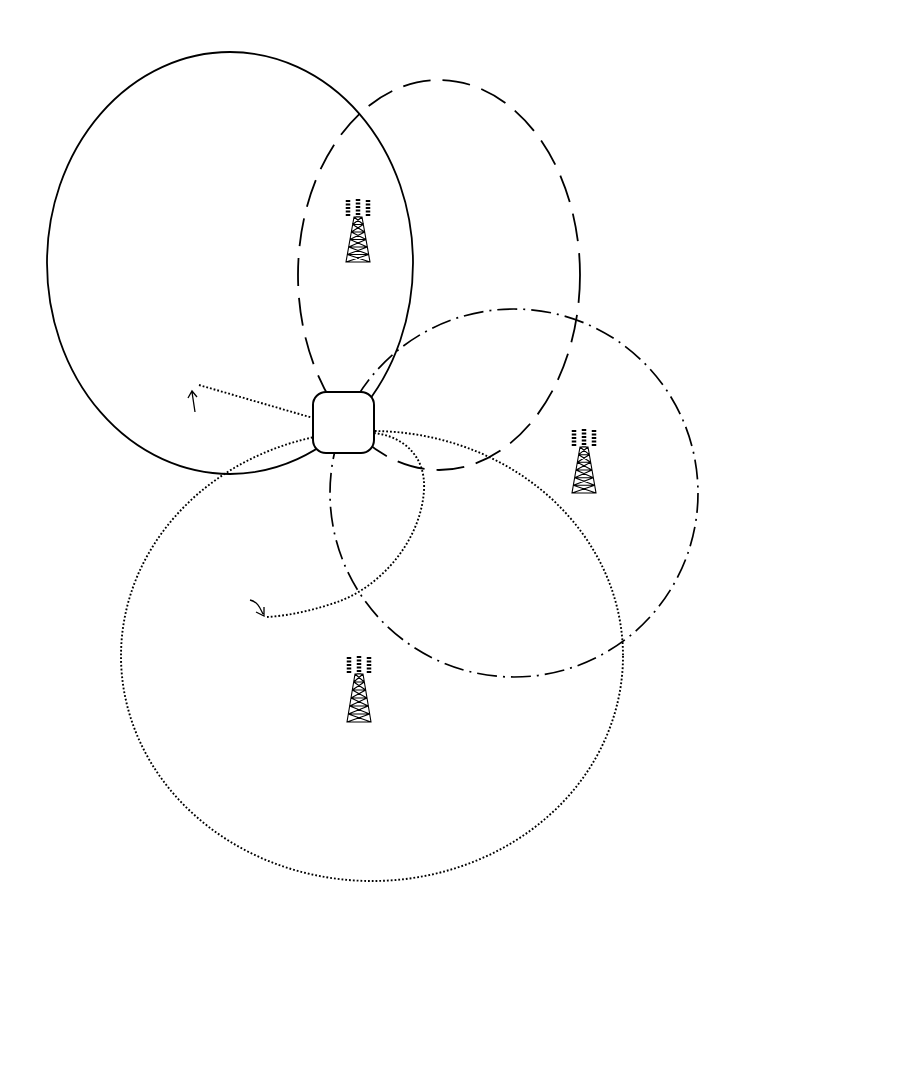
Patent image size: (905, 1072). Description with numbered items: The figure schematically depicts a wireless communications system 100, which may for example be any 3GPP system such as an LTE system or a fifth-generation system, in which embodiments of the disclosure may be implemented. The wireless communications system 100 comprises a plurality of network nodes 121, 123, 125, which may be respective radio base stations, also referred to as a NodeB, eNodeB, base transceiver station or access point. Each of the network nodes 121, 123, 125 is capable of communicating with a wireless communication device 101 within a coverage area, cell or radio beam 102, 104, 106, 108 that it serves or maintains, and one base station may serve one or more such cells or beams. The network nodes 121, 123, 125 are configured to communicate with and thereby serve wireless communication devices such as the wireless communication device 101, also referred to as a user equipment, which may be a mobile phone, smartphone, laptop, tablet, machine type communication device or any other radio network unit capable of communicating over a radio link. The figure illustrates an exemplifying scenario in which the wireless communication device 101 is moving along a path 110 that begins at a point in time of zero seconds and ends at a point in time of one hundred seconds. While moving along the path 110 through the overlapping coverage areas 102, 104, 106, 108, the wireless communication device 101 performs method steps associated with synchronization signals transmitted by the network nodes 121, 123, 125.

The wireless communications system 100 is at (672, 246).
The wireless communication device 101 is at (375, 418).
The coverage area 102 is at (100, 421).
The coverage area 104 is at (562, 183).
The coverage area 106 is at (640, 352).
The coverage area 108 is at (130, 722).
The path 110 is at (208, 386).
The network node 121 is at (348, 261).
The network node 123 is at (590, 489).
The network node 125 is at (367, 716).